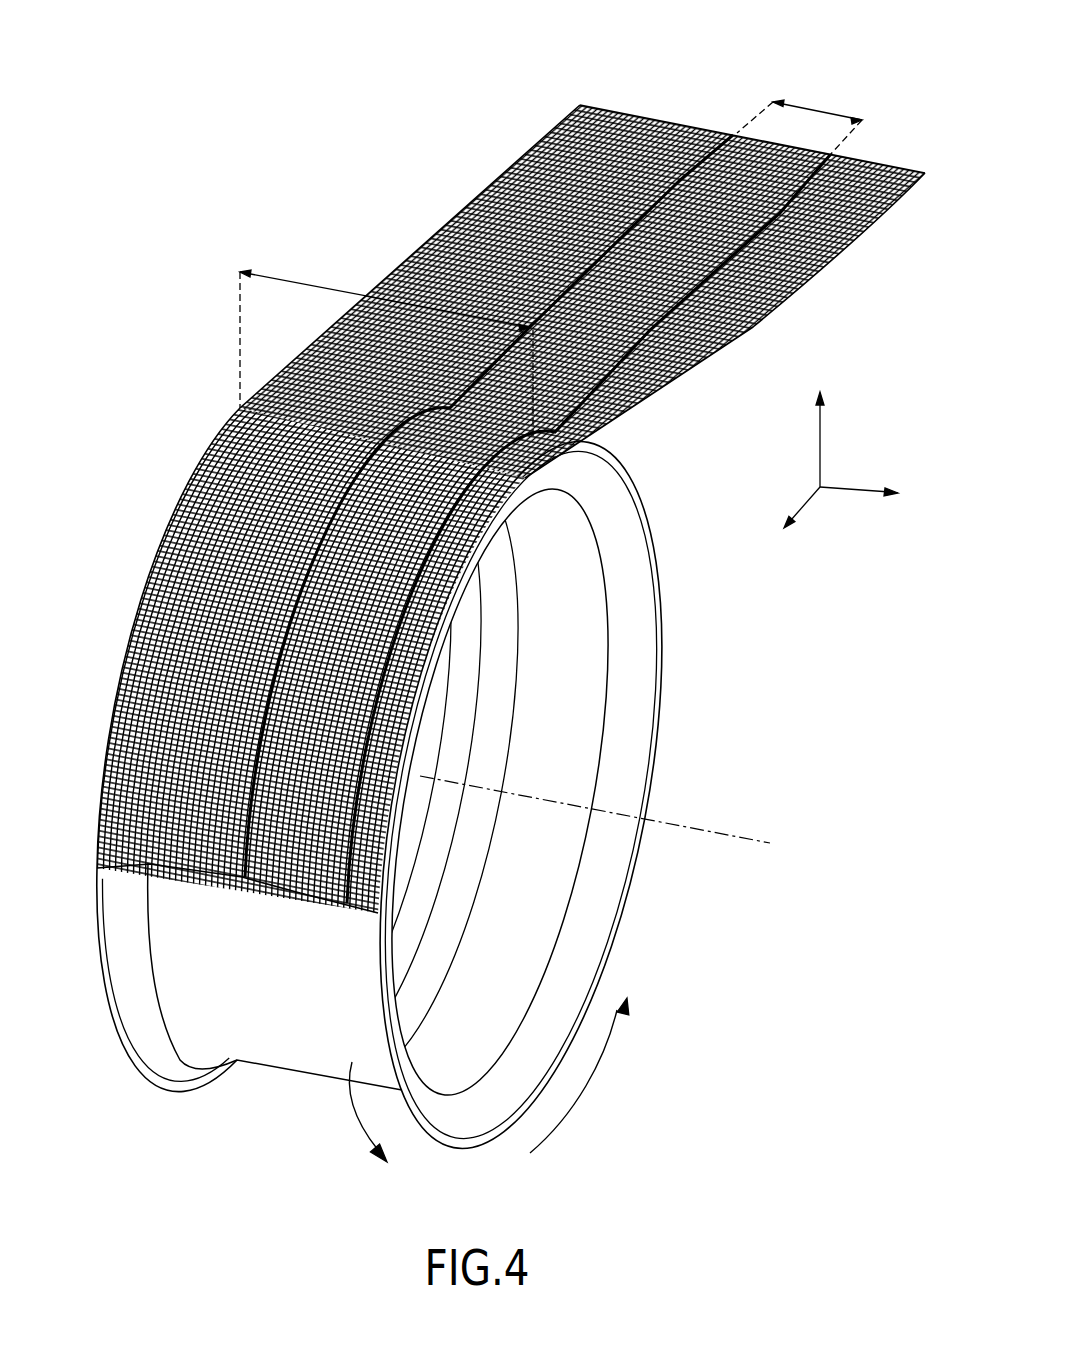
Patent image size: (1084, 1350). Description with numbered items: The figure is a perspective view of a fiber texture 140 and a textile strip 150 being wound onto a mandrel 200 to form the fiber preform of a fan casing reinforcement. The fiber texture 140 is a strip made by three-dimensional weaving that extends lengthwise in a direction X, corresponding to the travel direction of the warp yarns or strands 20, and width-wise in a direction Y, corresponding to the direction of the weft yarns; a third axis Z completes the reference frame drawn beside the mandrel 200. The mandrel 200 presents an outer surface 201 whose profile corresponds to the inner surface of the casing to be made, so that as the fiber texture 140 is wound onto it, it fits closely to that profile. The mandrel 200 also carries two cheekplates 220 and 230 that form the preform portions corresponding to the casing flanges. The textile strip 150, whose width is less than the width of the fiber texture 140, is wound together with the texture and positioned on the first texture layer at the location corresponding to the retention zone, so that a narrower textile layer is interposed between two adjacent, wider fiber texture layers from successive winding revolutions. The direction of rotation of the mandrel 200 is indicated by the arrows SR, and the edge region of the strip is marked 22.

The warp yarns or strands 20 is at (510, 480).
The third zone of the filter medium 22 is at (757, 325).
The fiber texture 140 is at (473, 222).
The textile strip 150 is at (718, 152).
The mandrel 200 is at (421, 802).
The outer surface 201 is at (260, 1047).
The cheekplate 220 is at (180, 1087).
The cheekplate 230 is at (462, 1143).
The direction of rotation SR is at (353, 1097).
The direction X is at (790, 527).
The direction Y is at (870, 493).
The Z axis Z is at (820, 426).